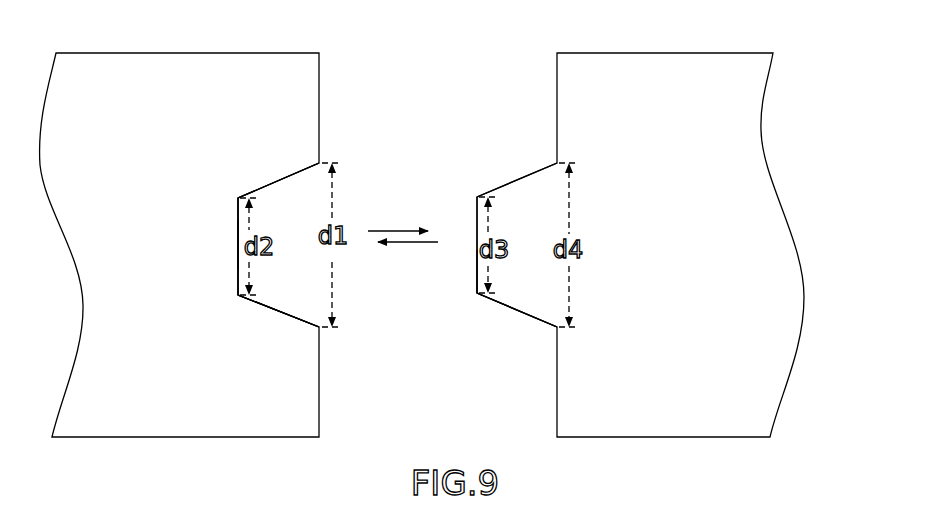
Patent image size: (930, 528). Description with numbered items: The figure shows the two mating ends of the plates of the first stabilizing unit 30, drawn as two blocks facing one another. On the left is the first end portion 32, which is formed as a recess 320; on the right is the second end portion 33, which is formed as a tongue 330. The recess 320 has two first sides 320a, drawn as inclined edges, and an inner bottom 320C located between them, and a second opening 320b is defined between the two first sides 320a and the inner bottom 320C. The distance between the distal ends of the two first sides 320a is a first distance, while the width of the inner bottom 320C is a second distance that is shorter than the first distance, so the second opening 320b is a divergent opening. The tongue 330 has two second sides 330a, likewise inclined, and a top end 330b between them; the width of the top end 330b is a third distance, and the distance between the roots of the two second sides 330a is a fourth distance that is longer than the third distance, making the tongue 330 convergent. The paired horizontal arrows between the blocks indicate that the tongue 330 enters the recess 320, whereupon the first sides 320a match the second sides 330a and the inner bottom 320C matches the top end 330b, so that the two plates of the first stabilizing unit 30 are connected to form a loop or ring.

The first stabilizing unit 30 is at (193, 75).
The recess 320 is at (293, 207).
The first sides 320a is at (265, 186).
The second opening 320b is at (309, 256).
The inner bottom 320C is at (237, 240).
The first end portion 32 is at (306, 320).
The tongue 330 is at (532, 215).
The second sides 330a is at (518, 180).
The top end 330b is at (477, 230).
The second end portion 33 is at (477, 281).